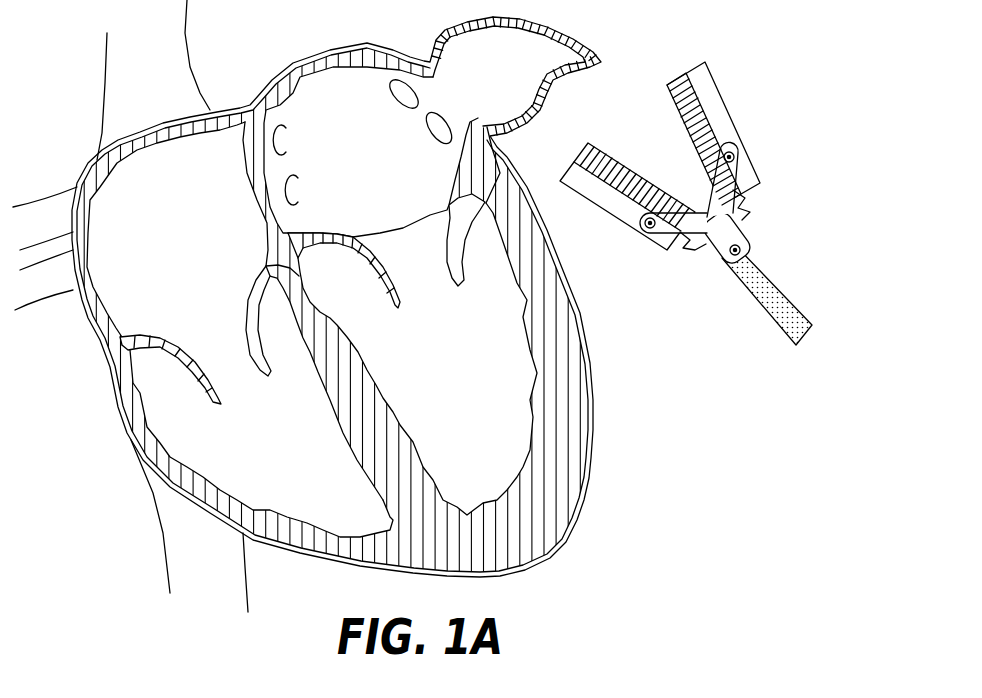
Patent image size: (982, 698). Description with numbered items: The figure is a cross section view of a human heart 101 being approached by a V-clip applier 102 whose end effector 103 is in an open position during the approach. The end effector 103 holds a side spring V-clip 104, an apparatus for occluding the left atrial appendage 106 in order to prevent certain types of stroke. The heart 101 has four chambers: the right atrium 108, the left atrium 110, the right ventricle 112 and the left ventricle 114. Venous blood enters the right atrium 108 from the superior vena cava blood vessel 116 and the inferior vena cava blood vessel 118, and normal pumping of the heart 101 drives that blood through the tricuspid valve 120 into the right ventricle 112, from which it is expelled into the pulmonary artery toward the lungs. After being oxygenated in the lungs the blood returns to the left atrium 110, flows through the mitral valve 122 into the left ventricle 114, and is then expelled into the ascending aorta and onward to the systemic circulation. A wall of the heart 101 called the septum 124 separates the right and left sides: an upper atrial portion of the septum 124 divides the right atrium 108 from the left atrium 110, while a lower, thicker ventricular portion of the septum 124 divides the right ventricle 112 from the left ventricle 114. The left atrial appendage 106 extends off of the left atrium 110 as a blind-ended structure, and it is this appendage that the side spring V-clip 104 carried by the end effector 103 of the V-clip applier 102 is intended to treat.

The human heart 101 is at (293, 57).
The V-clip applier 102 is at (762, 258).
The end effector 103 is at (722, 112).
The side spring V-clip 104 is at (665, 86).
The left atrial appendage 106 is at (534, 73).
The right atrium 108 is at (189, 258).
The left atrium 110 is at (375, 163).
The right ventricle 112 is at (294, 443).
The left ventricle 114 is at (486, 420).
The superior vena cava blood vessel 116 is at (164, 77).
The inferior vena cava blood vessel 118 is at (223, 560).
The tricuspid valve 120 is at (241, 353).
The mitral valve 122 is at (438, 271).
The septum 124 is at (392, 447).